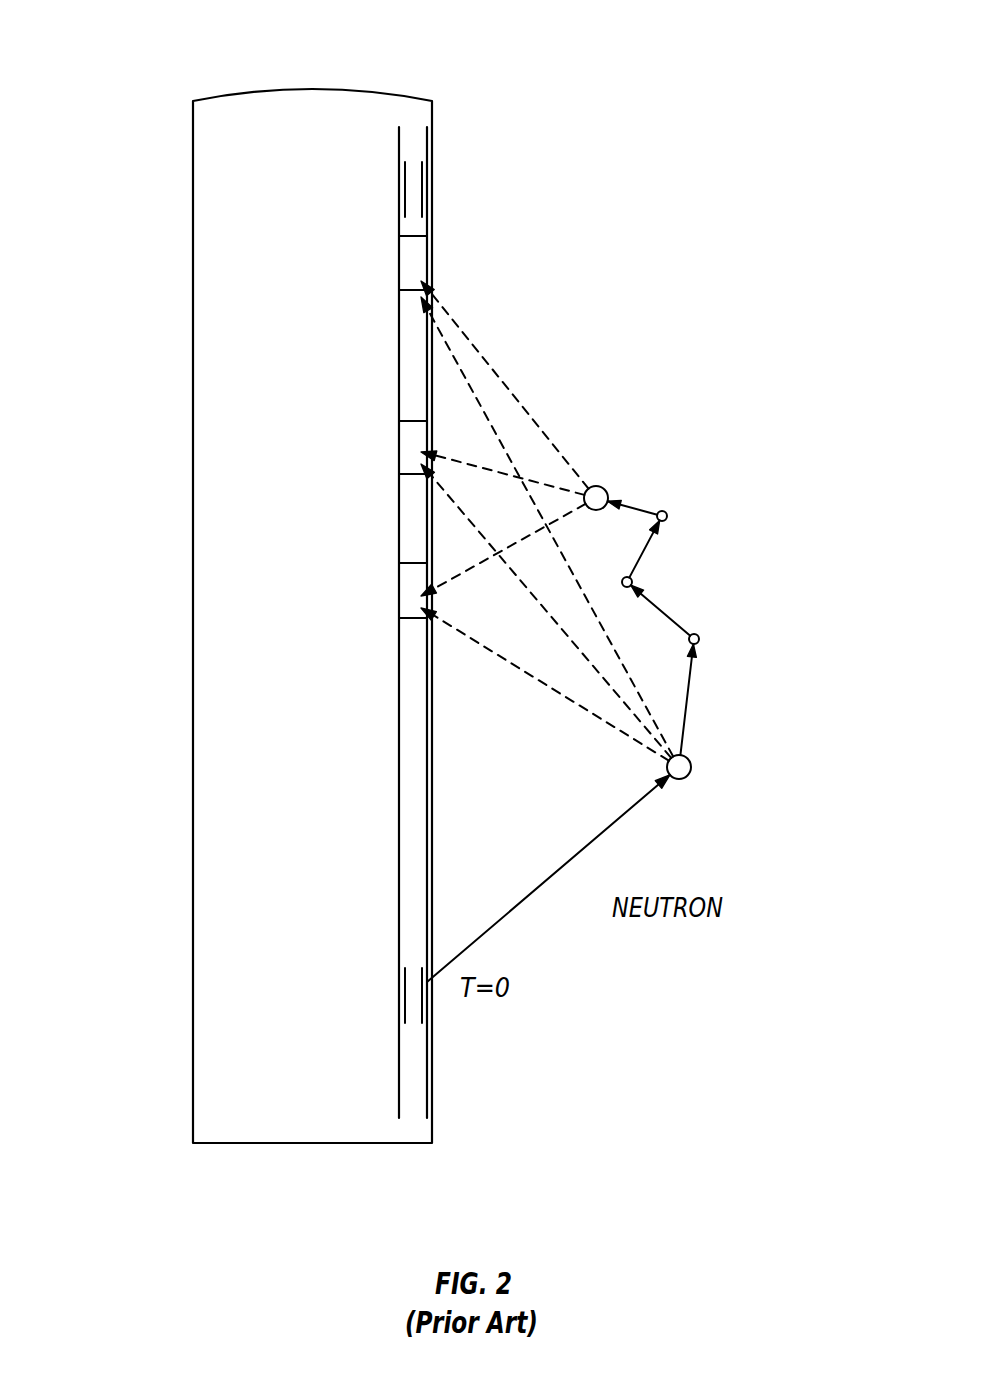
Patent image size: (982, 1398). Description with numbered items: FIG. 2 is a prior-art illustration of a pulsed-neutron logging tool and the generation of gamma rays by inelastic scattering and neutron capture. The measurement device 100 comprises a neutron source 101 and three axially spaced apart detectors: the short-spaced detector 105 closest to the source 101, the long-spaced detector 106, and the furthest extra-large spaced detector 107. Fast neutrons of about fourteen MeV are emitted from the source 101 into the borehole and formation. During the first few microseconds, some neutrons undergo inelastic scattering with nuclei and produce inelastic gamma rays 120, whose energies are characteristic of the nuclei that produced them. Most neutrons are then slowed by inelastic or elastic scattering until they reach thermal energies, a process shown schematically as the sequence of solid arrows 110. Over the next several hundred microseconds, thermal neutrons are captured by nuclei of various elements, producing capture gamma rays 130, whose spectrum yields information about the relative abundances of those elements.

The measurement device 100 is at (135, 50).
The neutron source 101 is at (224, 808).
The short-spaced detector 105 is at (224, 591).
The long-spaced detector 106 is at (224, 447).
The extra-large spaced detector 107 is at (224, 262).
The sequence of solid arrows 110 is at (648, 597).
The inelastic gamma rays 120 is at (657, 752).
The capture gamma rays 130 is at (552, 498).